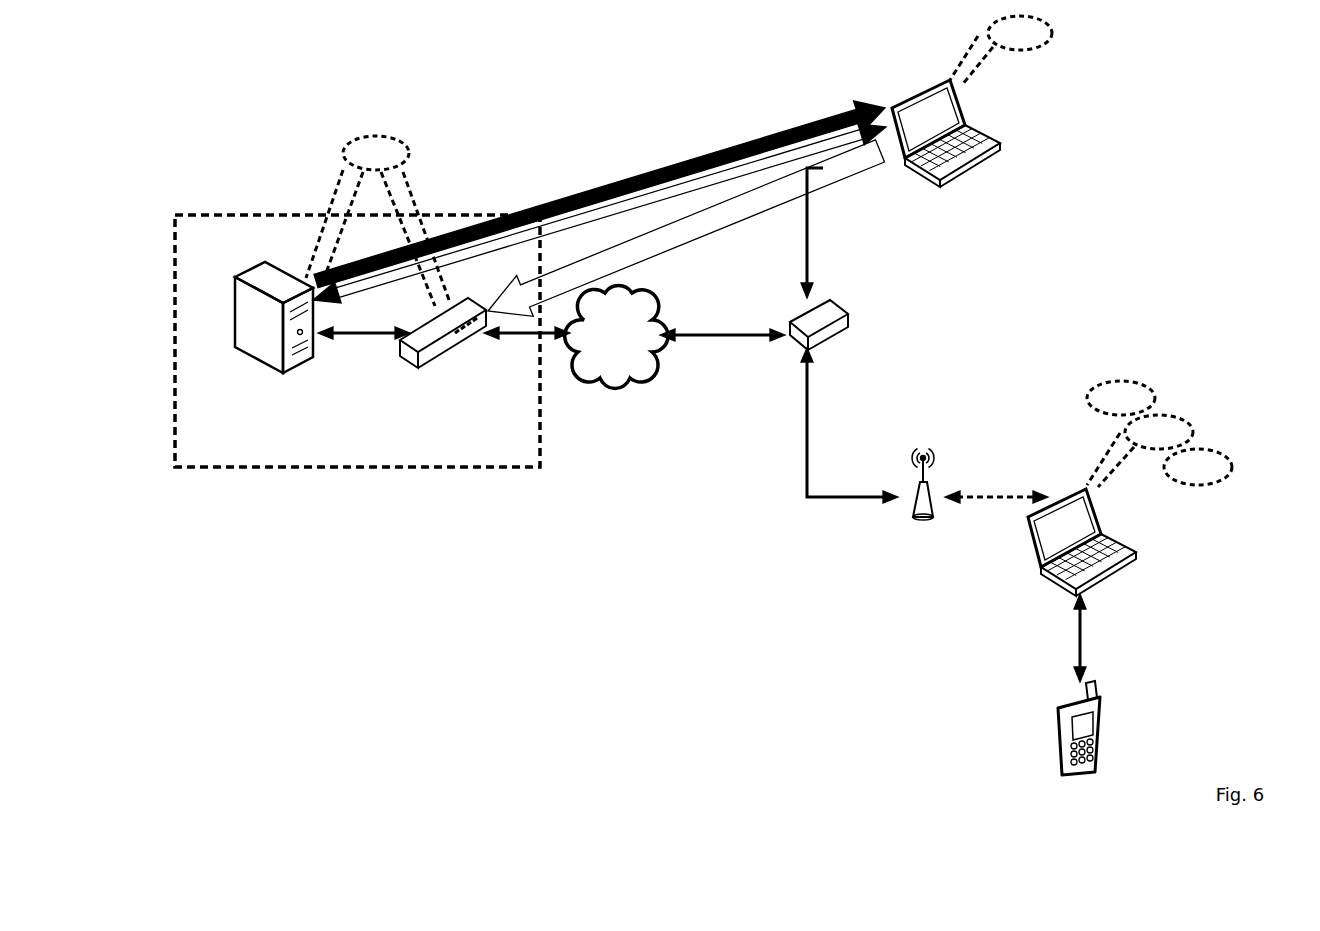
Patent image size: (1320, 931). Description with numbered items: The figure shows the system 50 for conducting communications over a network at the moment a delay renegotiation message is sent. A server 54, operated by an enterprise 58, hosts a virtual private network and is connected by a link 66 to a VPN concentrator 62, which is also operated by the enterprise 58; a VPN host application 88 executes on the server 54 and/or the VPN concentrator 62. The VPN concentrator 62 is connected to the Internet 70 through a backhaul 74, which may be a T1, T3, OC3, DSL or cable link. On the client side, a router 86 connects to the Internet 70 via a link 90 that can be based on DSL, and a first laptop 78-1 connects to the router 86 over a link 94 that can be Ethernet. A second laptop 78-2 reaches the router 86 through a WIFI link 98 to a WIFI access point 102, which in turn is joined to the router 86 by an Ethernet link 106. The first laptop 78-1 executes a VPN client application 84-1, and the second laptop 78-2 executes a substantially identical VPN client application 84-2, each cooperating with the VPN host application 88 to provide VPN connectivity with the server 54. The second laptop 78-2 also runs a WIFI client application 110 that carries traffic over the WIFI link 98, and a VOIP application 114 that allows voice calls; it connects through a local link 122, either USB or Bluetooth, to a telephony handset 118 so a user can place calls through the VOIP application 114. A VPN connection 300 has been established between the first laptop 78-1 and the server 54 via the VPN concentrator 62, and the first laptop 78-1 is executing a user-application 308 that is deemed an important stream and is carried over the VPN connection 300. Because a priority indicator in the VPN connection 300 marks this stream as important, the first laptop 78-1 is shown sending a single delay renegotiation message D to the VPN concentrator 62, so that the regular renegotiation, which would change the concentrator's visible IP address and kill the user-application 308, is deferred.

The system 50 is at (287, 693).
The server 54 is at (250, 352).
The enterprise 58 is at (210, 482).
The VPN concentrator 62 is at (405, 360).
The link 66 is at (364, 333).
The Internet 70 is at (616, 337).
The backhaul 74 is at (527, 333).
The first laptop 78-1 is at (995, 170).
The second laptop 78-2 is at (1145, 552).
The VPN client application 84-1 is at (1001, 50).
The VPN client application 84-2 is at (1140, 451).
The router 86 is at (860, 306).
The VPN host application 88 is at (377, 221).
The link 90 is at (722, 335).
The link 94 is at (811, 233).
The WIFI link 98 is at (996, 497).
The WIFI access point 102 is at (940, 475).
The Ethernet link 106 is at (845, 425).
The WIFI client application 110 is at (1121, 398).
The VOIP application 114 is at (1198, 467).
The telephony handset 118 is at (1115, 707).
The local link 122 is at (1080, 638).
The VPN connection 300 is at (668, 198).
The user-application 308 is at (665, 160).
The delay renegotiation message D is at (740, 242).